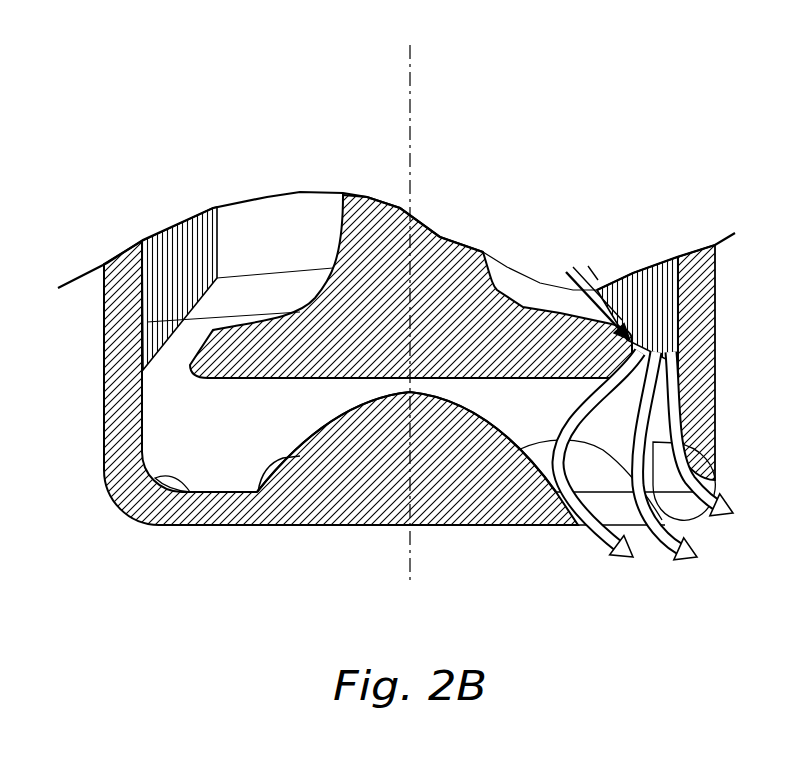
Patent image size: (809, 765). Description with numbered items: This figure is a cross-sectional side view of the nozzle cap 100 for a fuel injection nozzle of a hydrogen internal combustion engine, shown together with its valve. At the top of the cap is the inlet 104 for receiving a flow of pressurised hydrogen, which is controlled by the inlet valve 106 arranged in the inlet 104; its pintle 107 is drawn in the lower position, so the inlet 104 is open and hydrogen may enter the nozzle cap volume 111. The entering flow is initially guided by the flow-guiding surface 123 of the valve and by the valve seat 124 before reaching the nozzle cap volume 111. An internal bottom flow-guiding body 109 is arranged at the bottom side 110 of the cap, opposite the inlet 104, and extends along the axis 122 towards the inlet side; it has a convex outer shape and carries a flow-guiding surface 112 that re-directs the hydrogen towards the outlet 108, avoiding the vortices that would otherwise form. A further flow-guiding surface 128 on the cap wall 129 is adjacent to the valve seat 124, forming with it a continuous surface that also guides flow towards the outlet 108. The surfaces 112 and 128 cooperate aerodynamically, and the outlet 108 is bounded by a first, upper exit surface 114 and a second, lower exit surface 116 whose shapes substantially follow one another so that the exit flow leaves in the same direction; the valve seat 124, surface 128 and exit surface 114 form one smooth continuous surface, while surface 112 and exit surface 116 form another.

The nozzle cap 100 is at (130, 535).
The inlet 104 is at (205, 322).
The inlet valve 106 is at (332, 222).
The pintle 107 is at (312, 318).
The outlet 108 is at (655, 475).
The internal bottom flow-guiding body 109 is at (480, 474).
The bottom side 110 is at (187, 490).
The nozzle cap volume 111 is at (262, 439).
The flow-guiding surface 112 is at (667, 560).
The first exit surface 114 is at (718, 485).
The second exit surface 116 is at (560, 500).
The axis 122 is at (412, 123).
The flow-guiding surface of the valve 123 is at (640, 345).
The valve seat 124 is at (630, 345).
The flow-guiding surface 128 is at (672, 362).
The cap wall 129 is at (678, 378).